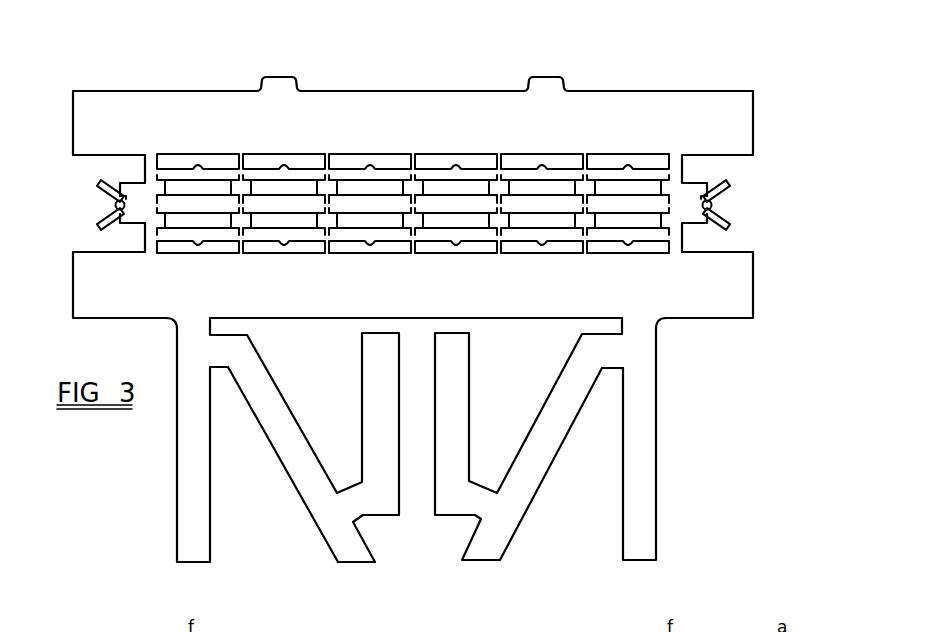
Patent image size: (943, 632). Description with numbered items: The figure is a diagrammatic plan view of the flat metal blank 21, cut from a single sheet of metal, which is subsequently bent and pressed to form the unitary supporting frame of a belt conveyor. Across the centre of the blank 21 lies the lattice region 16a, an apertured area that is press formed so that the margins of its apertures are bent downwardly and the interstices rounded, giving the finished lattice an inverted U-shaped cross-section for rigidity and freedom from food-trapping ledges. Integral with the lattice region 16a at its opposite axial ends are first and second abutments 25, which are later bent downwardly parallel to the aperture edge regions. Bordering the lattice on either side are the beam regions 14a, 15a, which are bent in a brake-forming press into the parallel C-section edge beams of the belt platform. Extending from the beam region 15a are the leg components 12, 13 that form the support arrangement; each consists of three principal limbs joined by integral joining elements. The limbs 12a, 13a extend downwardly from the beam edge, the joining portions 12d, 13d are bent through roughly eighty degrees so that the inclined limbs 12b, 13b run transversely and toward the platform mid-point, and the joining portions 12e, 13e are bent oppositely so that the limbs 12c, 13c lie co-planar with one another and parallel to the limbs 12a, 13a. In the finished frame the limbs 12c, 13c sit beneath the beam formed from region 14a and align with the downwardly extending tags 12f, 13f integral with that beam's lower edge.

The leg component 12 is at (252, 461).
The limb 12a is at (193, 497).
The inclined limb 12b is at (290, 425).
The limb 12c is at (380, 453).
The joining portion 12d is at (218, 352).
The joining portion 12e is at (377, 545).
The tag 12f is at (278, 84).
The leg component 13 is at (592, 472).
The limb 13a is at (643, 482).
The inclined limb 13b is at (537, 450).
The limb 13c is at (453, 415).
The joining portion 13d is at (613, 350).
The joining portion 13e is at (464, 556).
The tag 13f is at (551, 84).
The beam region 14a is at (682, 110).
The beam region 15a is at (693, 273).
The lattice region 16a is at (627, 191).
The blank 21 is at (675, 329).
The abutment 25 is at (138, 188).